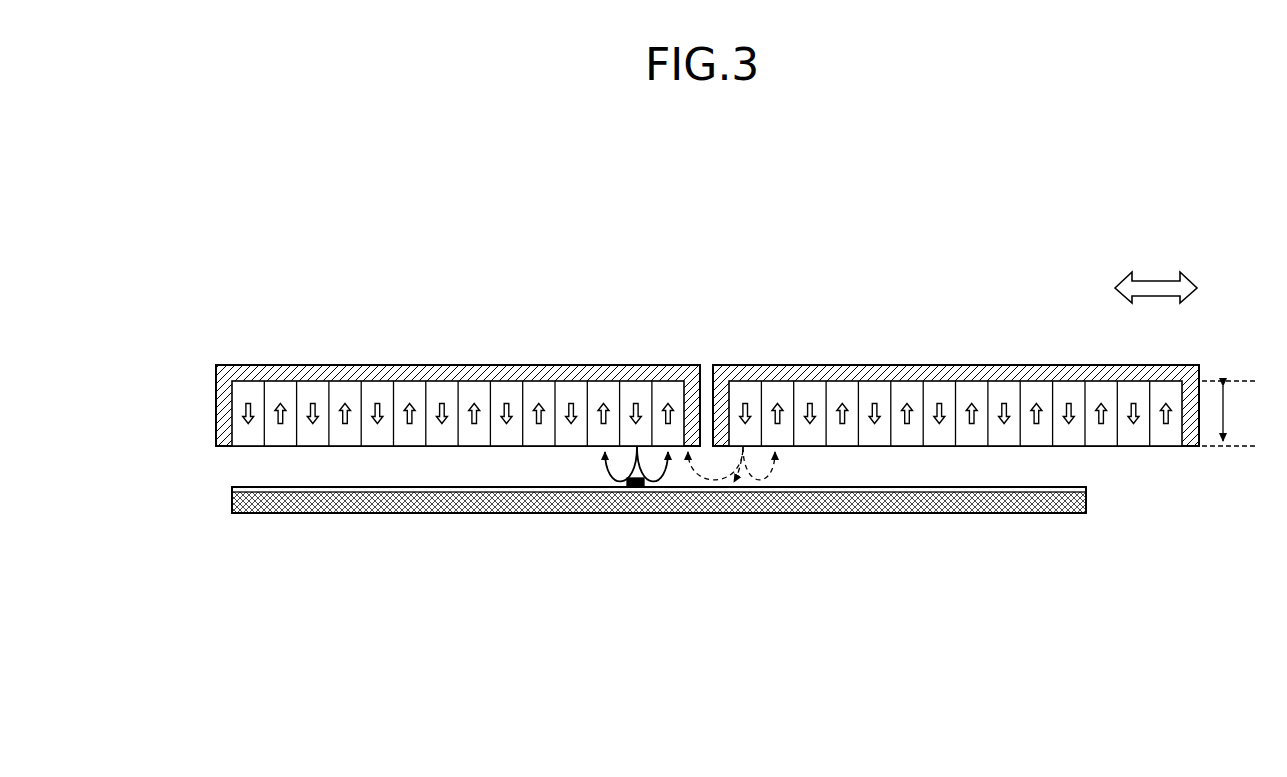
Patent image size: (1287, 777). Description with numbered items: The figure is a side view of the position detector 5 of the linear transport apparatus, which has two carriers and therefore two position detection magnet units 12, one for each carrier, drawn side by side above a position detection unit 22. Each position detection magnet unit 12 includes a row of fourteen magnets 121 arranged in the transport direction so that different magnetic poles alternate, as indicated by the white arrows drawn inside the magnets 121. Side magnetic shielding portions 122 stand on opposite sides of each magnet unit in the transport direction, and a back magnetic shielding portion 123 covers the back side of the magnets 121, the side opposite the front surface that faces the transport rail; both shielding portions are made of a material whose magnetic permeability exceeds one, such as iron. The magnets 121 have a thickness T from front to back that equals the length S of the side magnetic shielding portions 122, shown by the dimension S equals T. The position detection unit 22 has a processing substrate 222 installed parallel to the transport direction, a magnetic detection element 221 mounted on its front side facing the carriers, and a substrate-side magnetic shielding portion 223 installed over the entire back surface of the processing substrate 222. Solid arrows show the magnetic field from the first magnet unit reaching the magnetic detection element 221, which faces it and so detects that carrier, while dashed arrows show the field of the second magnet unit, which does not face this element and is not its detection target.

The position detector 5 is at (696, 172).
The position detection magnet unit 12 is at (664, 369).
The magnet 121 is at (283, 390).
The side magnetic shielding portion 122 is at (220, 396).
The back magnetic shielding portion 123 is at (600, 365).
The position detection unit 22 is at (659, 538).
The magnetic detection element 221 is at (640, 488).
The processing substrate 222 is at (827, 490).
The substrate-side magnetic shielding portion 223 is at (923, 513).